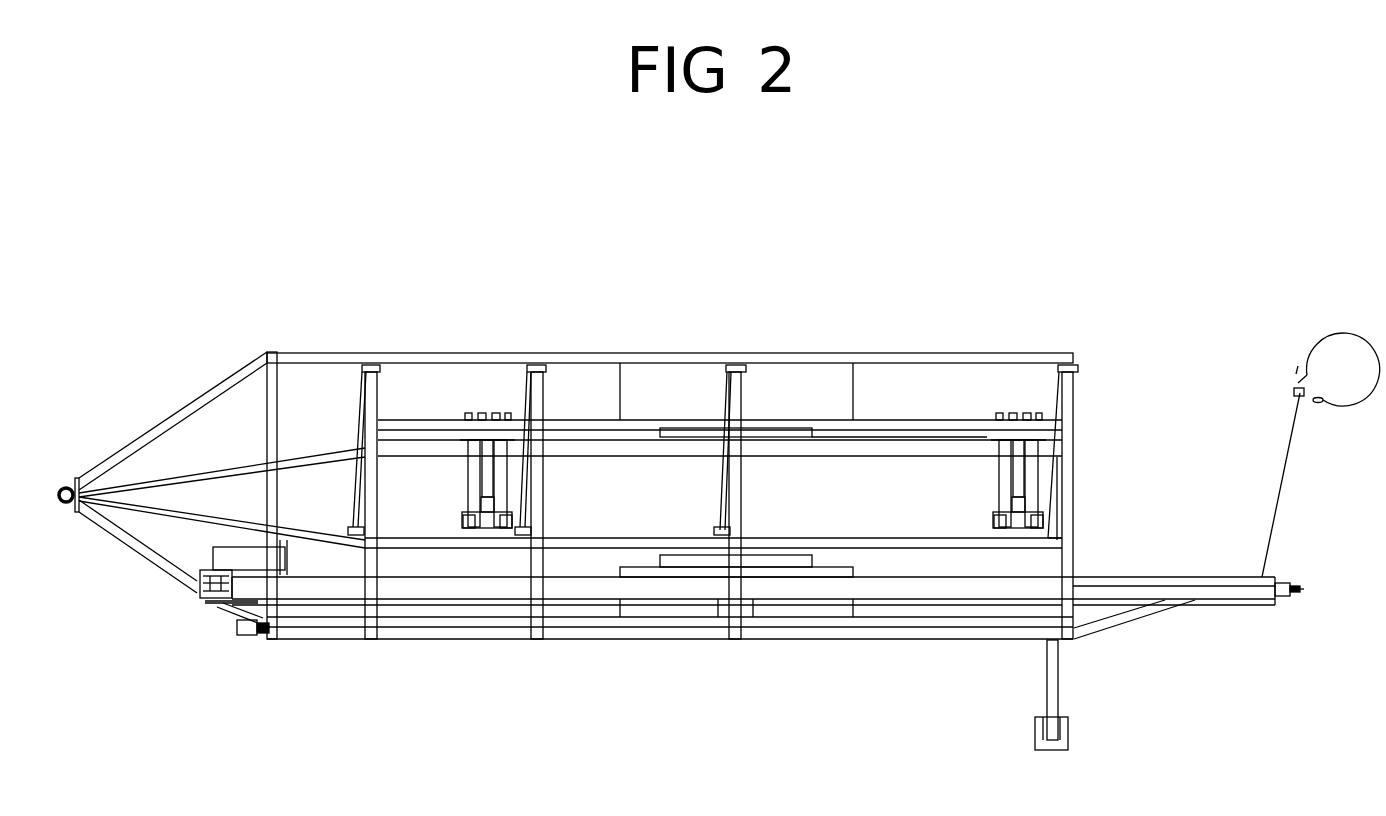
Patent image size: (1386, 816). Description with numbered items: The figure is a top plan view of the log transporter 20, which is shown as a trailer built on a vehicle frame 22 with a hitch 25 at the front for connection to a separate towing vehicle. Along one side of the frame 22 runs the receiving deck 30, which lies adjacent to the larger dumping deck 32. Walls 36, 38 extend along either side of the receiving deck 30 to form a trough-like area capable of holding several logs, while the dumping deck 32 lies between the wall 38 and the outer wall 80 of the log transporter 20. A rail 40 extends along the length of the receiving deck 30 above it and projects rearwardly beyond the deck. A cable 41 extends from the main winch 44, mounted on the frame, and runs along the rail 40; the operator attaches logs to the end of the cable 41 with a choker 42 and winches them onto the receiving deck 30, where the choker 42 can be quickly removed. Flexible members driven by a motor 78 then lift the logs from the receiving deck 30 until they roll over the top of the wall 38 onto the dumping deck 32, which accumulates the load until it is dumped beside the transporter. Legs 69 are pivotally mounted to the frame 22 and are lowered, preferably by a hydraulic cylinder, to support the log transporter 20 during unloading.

The log transporter 20 is at (672, 425).
The vehicle frame 22 is at (418, 639).
The hitch 25 is at (67, 487).
The receiving deck 30 is at (647, 682).
The dumping deck 32 is at (720, 331).
The wall 36 is at (982, 633).
The wall 38 is at (878, 543).
The rail 40 is at (587, 588).
The cable 41 is at (1280, 462).
The choker 42 is at (1343, 333).
The main winch 44 is at (197, 587).
The legs 69 is at (1058, 667).
The motor 78 is at (237, 630).
The outer wall 80 is at (583, 357).